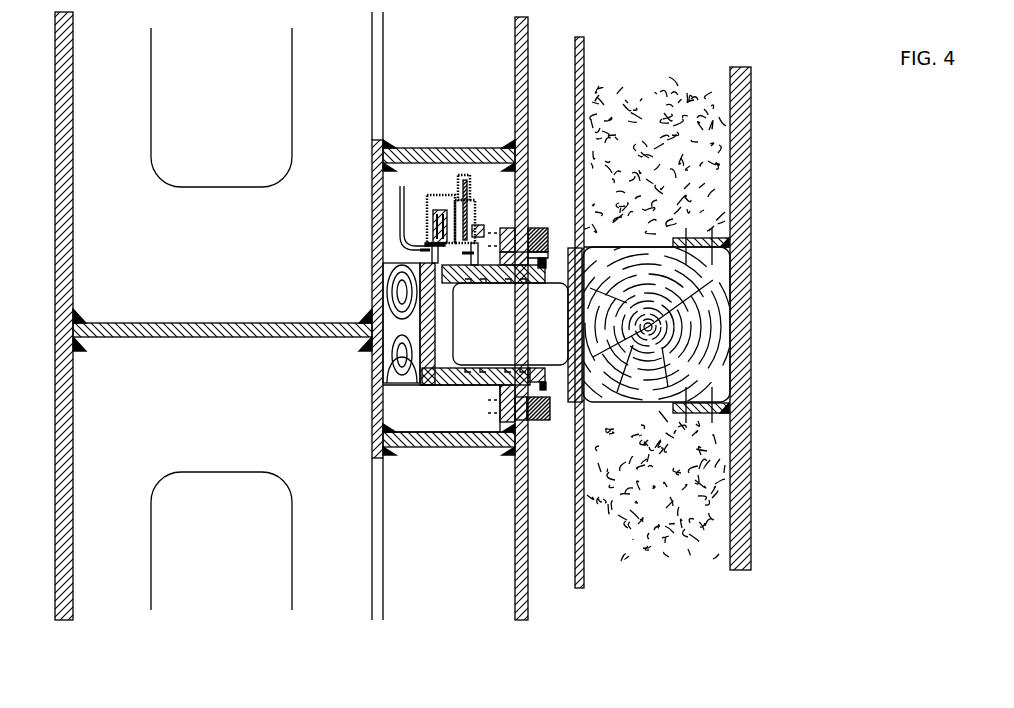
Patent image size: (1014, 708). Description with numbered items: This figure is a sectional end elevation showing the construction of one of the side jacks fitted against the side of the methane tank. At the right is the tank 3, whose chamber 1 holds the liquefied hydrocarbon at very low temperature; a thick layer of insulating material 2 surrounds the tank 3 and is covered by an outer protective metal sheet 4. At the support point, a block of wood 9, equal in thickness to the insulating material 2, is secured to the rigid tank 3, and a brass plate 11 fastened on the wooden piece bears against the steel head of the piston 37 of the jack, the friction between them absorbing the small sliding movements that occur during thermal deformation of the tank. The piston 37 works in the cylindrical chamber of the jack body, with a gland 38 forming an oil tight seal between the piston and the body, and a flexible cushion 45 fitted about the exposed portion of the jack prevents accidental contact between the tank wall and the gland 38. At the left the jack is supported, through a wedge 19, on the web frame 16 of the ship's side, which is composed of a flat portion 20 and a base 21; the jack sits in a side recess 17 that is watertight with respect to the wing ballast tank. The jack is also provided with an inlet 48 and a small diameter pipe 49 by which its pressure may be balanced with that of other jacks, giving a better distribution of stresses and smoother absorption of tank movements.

The chamber 1 is at (722, 300).
The insulating material 2 is at (637, 141).
The tank 3 is at (750, 265).
The outer protective metal sheet 4 is at (580, 92).
The block of wood 9 is at (688, 333).
The brass plate 11 is at (575, 330).
The web frame 16 is at (312, 382).
The side recess 17 is at (432, 408).
The wedge 19 is at (402, 293).
The flat portion 20 is at (378, 238).
The base 21 is at (220, 332).
The piston 37 is at (477, 298).
The gland 38 is at (543, 250).
The flexible cushion 45 is at (542, 423).
The inlet 48 is at (430, 252).
The pipe 49 is at (403, 192).